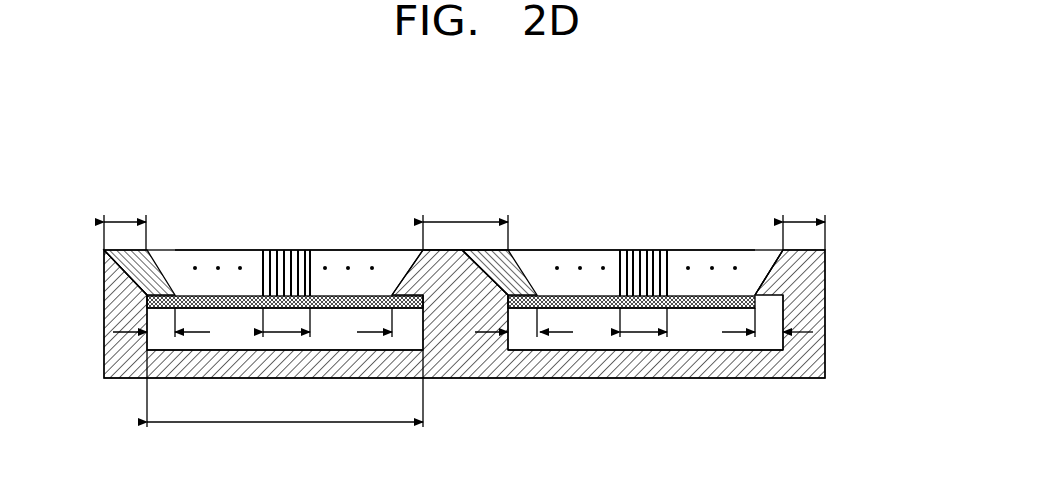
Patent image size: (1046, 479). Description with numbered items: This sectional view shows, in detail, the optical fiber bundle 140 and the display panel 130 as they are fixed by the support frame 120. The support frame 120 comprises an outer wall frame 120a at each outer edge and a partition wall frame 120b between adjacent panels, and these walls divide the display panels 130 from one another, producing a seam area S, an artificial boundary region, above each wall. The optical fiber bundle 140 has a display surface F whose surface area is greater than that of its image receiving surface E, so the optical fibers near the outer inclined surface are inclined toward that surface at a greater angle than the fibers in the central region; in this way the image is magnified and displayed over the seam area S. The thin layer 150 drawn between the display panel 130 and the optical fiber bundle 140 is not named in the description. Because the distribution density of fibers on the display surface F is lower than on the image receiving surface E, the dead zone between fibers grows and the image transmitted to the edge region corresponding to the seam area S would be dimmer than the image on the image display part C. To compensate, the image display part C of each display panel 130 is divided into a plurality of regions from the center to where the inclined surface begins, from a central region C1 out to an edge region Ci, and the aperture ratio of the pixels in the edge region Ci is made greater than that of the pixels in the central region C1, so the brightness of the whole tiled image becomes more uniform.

The support frame 120 is at (774, 384).
The outer wall frame 120a is at (117, 284).
The partition wall frame 120b is at (460, 280).
The display panel 130 is at (231, 320).
The optical fiber bundle 140 is at (767, 270).
The electrode layer 150 is at (320, 298).
The image receiving surface E is at (383, 295).
The display surface F is at (348, 250).
The seam area S is at (464, 221).
The image display part C is at (285, 410).
The edge region Ci is at (463, 322).
The central region C1 is at (465, 322).